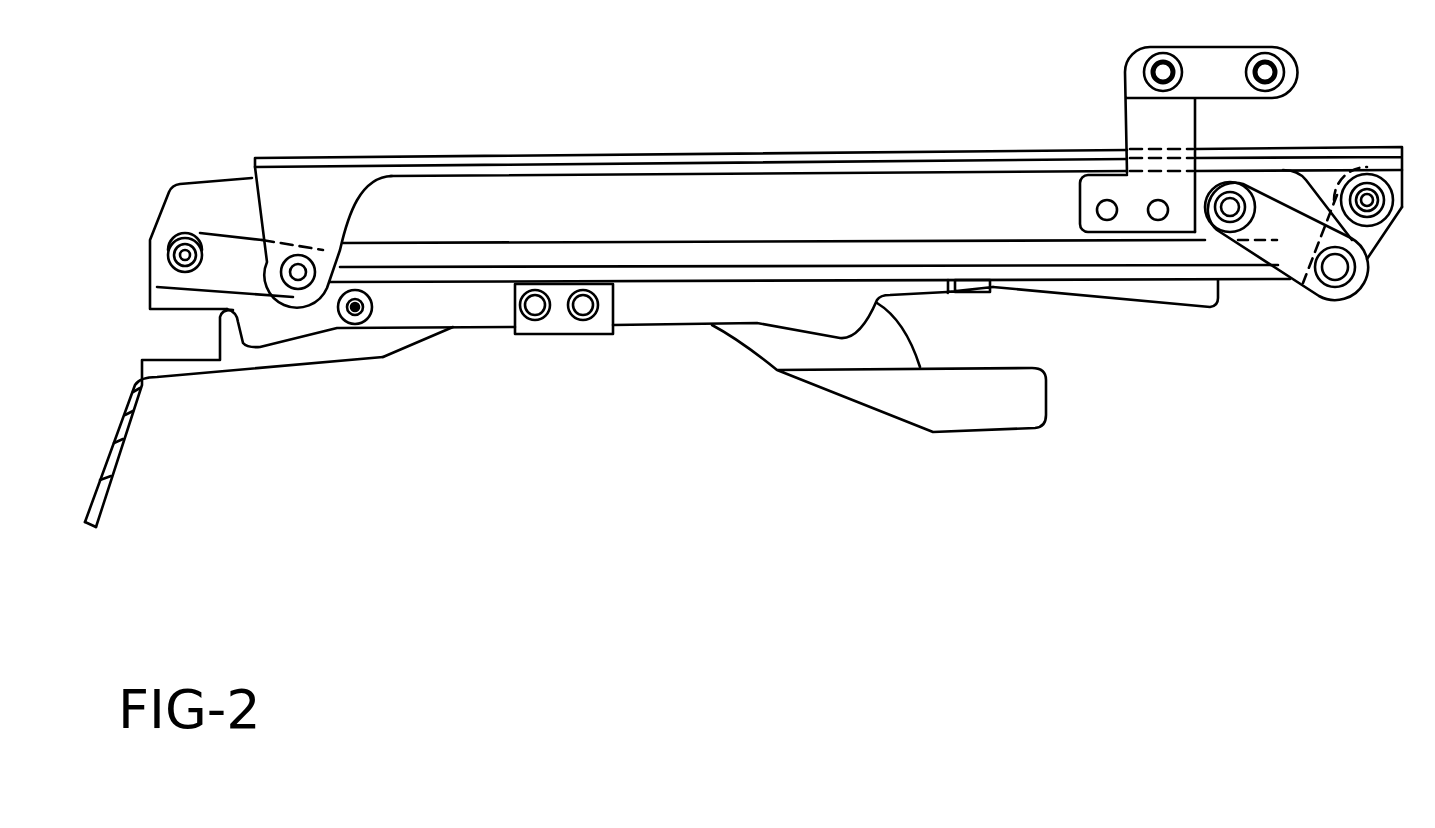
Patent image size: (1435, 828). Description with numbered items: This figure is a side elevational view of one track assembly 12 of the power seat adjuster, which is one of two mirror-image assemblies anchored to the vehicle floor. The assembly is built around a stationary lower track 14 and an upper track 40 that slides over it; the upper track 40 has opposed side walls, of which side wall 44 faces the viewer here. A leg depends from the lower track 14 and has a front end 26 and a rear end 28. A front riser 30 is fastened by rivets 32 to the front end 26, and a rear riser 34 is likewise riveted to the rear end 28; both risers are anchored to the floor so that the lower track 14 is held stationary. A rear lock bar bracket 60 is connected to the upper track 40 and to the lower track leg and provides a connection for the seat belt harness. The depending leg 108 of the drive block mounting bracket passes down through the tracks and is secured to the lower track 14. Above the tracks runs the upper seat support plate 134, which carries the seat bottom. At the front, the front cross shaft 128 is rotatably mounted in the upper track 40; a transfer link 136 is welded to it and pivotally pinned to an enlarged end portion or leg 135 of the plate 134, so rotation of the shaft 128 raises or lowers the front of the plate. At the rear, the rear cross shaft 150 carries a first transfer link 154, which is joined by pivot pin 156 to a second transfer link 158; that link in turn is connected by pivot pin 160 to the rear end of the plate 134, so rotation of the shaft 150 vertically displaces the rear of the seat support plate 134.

The track assembly 12 is at (632, 58).
The lower track 14 is at (663, 303).
The first or front end of the leg 26 is at (167, 310).
The second or rear end of the leg 28 is at (950, 290).
The front riser 30 is at (100, 512).
The rivets 32 is at (355, 312).
The rear riser 34 is at (870, 390).
The upper track 40 is at (486, 241).
The side wall 44 is at (743, 193).
The rear lock bar bracket 60 is at (1137, 110).
The depending leg 108 is at (548, 330).
The front cross shaft 128 is at (170, 310).
The upper seat support plate 134 is at (353, 170).
The enlarged end portion or leg 135 is at (218, 190).
The transfer link 136 is at (217, 240).
The rear cross shaft 150 is at (1230, 207).
The first transfer link 154 is at (1293, 268).
The pivot pin 156 is at (1335, 267).
The second transfer link 158 is at (1382, 252).
The pivot pin 160 is at (1355, 183).